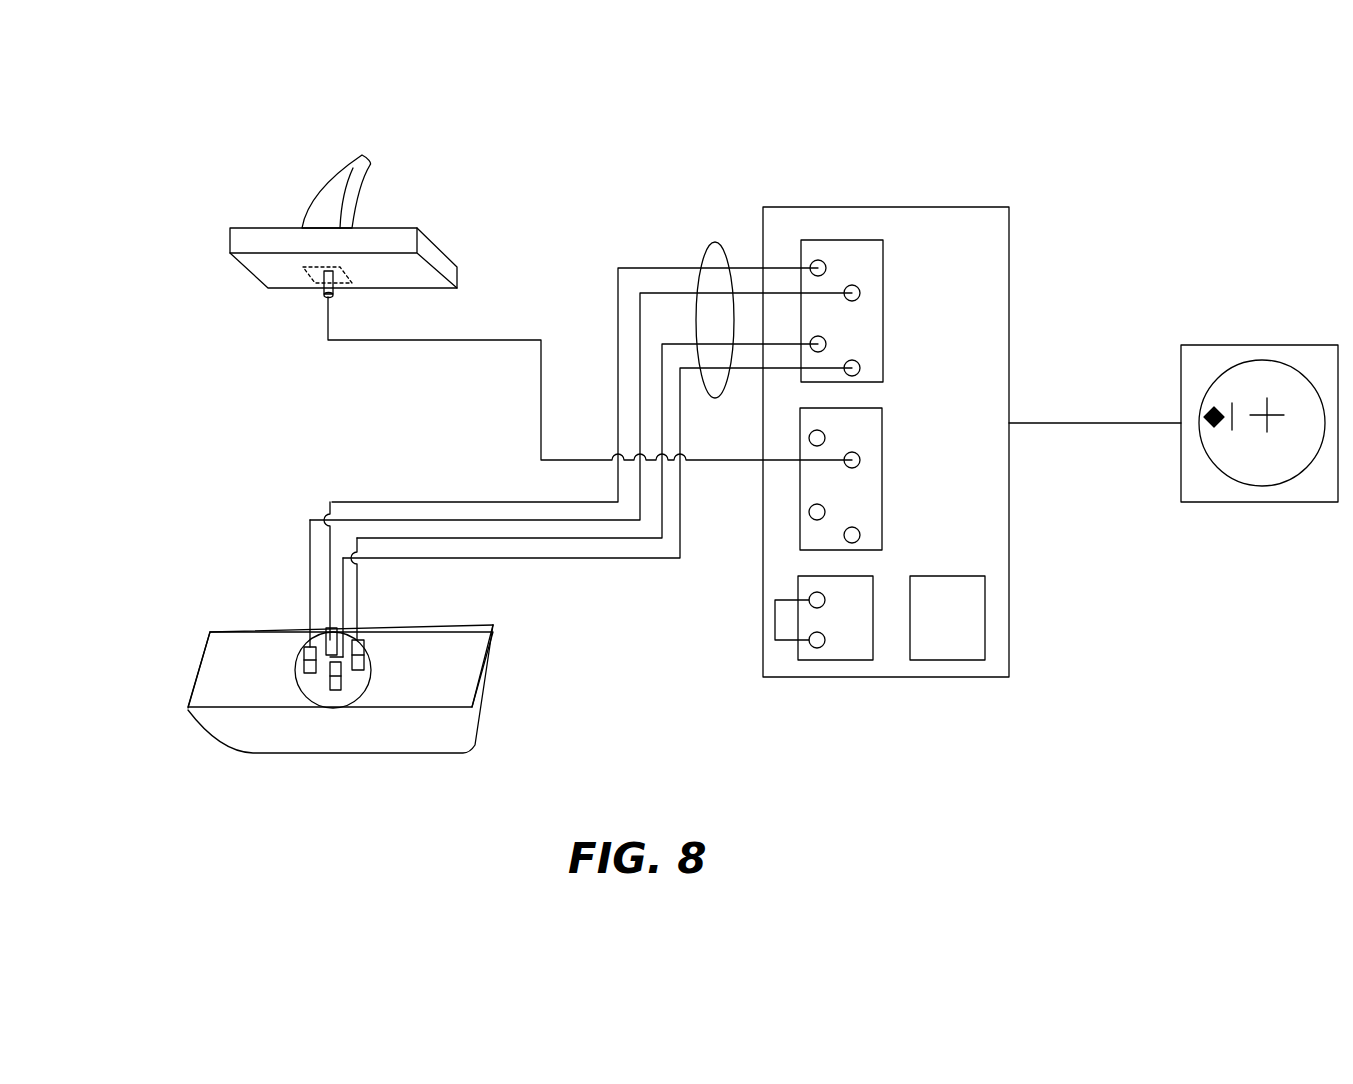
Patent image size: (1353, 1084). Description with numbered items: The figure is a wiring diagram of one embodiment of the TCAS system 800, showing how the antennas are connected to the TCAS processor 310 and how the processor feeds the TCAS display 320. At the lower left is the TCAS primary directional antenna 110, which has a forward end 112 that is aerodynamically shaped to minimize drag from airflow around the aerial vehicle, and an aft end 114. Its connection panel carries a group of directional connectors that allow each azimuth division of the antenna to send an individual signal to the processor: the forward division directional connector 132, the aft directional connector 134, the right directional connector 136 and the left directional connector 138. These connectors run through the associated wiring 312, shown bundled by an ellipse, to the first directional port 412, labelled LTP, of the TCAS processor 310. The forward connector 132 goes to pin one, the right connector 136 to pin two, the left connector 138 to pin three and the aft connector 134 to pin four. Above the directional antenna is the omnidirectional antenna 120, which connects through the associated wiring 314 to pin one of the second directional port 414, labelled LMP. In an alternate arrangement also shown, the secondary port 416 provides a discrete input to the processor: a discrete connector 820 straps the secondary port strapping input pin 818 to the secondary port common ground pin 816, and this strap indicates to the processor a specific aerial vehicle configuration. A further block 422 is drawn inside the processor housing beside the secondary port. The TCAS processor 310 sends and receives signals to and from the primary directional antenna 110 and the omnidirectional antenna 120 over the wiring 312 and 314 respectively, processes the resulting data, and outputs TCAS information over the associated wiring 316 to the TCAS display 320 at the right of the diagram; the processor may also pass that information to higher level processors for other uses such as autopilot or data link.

The system 800 is at (136, 238).
The TCAS primary directional antenna 110 is at (213, 747).
The forward end 112 is at (185, 690).
The aft end 114 is at (492, 682).
The omnidirectional antenna 120 is at (308, 200).
The forward division directional connector 132 is at (300, 660).
The aft directional connector 134 is at (367, 657).
The right directional connector 136 is at (325, 640).
The left directional connector 138 is at (333, 683).
The TCAS processor 310 is at (882, 204).
The associated wiring 312 is at (712, 248).
The associated wiring 314 is at (735, 466).
The associated wiring 316 is at (1045, 422).
The TCAS display 320 is at (1222, 343).
The first directional port 412 is at (883, 283).
The second directional port 414 is at (883, 512).
The secondary port 416 is at (847, 662).
The module 422 is at (987, 618).
The secondary port common ground pin 816 is at (820, 650).
The secondary port strapping input pin 818 is at (807, 590).
The discrete connector 820 is at (773, 635).